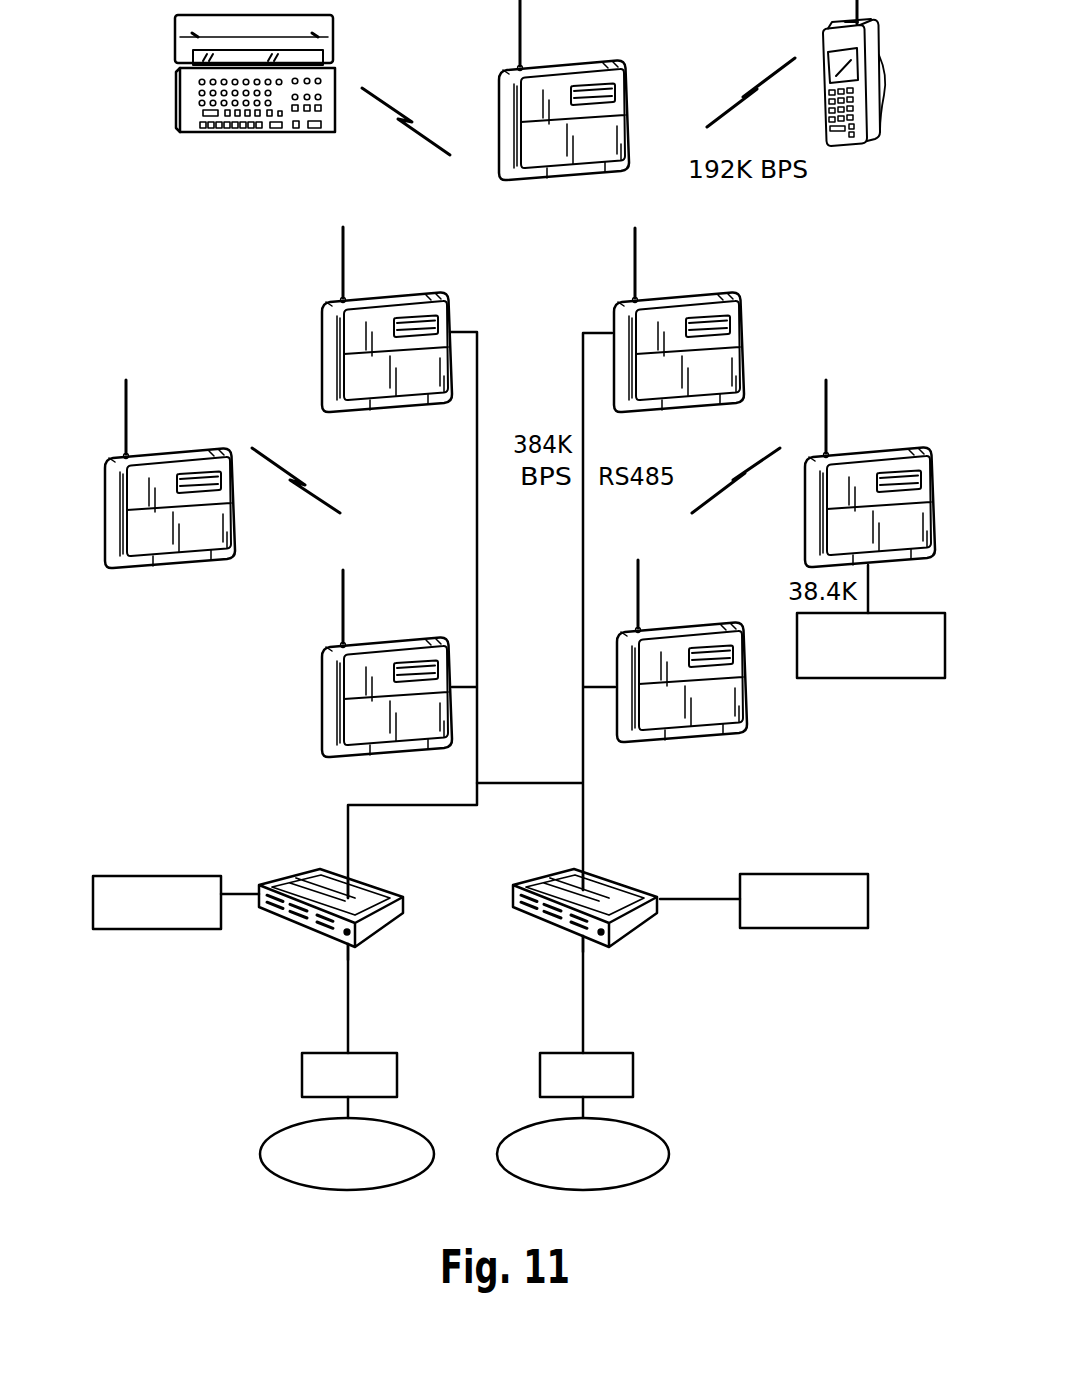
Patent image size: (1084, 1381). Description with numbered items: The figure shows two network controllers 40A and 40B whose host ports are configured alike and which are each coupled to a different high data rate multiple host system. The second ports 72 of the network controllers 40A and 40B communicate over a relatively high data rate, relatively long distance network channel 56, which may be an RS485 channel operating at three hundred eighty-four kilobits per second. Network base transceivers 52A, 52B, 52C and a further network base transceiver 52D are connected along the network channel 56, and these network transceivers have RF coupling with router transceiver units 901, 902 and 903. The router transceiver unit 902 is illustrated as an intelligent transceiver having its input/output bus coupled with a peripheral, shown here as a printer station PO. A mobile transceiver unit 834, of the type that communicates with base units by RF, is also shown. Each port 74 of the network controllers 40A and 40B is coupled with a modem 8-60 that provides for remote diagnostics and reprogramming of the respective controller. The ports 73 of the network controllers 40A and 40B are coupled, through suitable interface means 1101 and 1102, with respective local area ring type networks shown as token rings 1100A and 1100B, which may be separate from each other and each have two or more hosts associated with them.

The mobile transceiver unit 834 is at (227, 133).
The router transceiver unit 903 is at (565, 60).
The network base transceiver 52A is at (388, 292).
The network base transceiver 52B is at (388, 637).
The network base transceiver 52C is at (687, 622).
The network base transceiver 52D is at (682, 292).
The router transceiver unit 901 is at (172, 448).
The router transceiver unit 902 is at (870, 447).
The network channel 56 is at (525, 783).
The printer station PO is at (883, 613).
The modem 8-60 is at (110, 876).
The port 74 is at (243, 893).
The port 72 is at (350, 880).
The port 73 is at (350, 947).
The network controller 40A is at (404, 941).
The network controller 40B is at (637, 948).
The interface means 1101 is at (302, 1088).
The interface means 1102 is at (633, 1088).
The token ring 1100A is at (262, 1152).
The token ring 1100B is at (715, 1130).